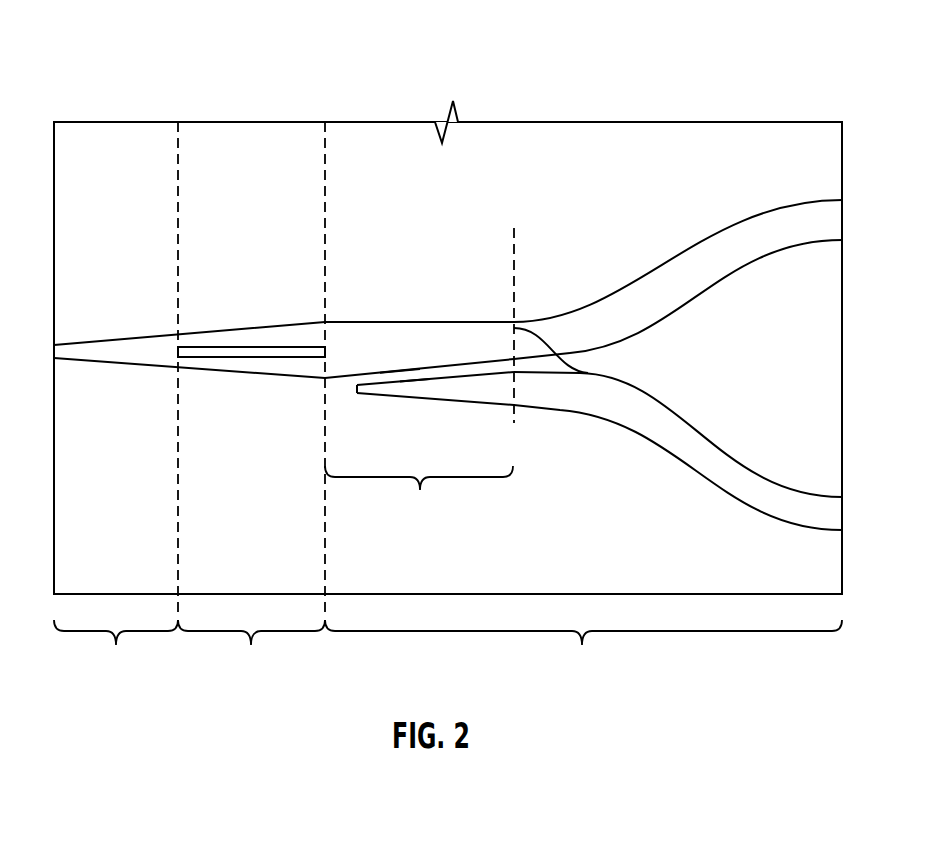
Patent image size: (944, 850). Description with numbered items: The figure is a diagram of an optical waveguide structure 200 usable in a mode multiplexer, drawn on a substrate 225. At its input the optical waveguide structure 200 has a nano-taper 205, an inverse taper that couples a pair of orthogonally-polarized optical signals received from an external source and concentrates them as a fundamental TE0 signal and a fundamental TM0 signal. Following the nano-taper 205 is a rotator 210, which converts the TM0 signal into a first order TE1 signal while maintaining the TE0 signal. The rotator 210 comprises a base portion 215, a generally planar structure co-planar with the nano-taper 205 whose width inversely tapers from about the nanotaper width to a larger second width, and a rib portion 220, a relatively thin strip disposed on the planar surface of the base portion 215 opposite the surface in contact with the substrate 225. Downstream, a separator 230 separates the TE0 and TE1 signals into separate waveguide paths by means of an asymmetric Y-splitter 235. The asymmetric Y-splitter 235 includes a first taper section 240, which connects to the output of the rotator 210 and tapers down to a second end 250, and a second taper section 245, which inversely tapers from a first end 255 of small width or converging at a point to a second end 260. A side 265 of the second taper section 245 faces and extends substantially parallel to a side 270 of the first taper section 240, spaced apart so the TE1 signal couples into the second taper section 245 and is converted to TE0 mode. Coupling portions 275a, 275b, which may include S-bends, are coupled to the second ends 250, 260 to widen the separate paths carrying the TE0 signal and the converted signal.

The optical waveguide structure 200 is at (790, 43).
The nano-taper 205 is at (116, 402).
The rotator 210 is at (251, 402).
The base portion 215 is at (225, 373).
The rib portion 220 is at (292, 357).
The substrate 225 is at (713, 145).
The separator 230 is at (583, 652).
The asymmetric Y-splitter 235 is at (419, 496).
The first taper section 240 is at (462, 332).
The second taper section 245 is at (386, 420).
The second end of first taper section 250 is at (582, 368).
The first end of second taper section 255 is at (357, 388).
The second end of second taper section 260 is at (517, 388).
The side of second taper section 265 is at (411, 377).
The side of first taper section 270 is at (406, 376).
The coupling portion 275a is at (648, 288).
The coupling portion 275b is at (670, 453).